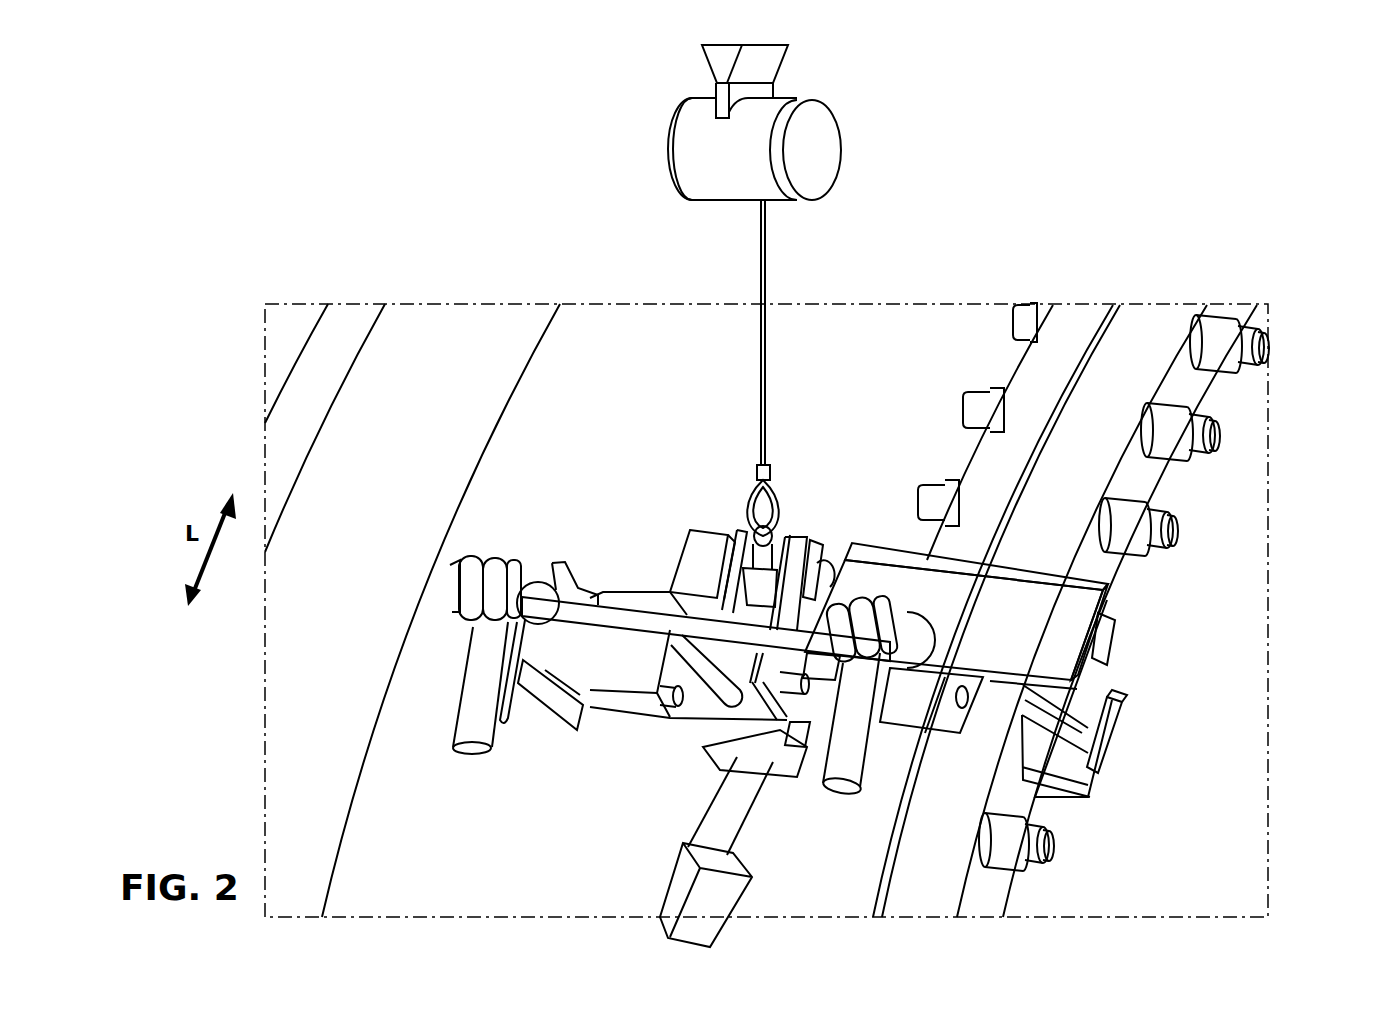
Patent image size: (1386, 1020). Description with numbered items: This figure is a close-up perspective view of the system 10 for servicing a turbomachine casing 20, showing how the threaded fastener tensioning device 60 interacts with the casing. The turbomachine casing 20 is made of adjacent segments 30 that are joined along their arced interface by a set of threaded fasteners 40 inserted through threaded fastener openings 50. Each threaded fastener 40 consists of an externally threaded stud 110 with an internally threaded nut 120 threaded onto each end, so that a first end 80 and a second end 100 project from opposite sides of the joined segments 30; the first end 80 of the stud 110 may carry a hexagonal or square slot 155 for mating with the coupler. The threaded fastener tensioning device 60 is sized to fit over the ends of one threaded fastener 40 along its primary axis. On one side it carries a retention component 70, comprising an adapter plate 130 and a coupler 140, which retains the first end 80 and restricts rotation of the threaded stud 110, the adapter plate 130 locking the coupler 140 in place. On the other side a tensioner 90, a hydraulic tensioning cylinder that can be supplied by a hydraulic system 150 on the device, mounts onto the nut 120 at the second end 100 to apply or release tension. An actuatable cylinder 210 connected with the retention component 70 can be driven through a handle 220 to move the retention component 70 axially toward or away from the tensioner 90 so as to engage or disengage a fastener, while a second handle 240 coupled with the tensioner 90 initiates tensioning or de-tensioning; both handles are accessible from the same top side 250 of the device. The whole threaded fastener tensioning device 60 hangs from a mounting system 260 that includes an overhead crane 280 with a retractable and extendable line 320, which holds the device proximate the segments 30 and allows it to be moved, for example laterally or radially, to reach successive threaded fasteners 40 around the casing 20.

The system 10 is at (572, 274).
The turbomachine casing 20 is at (345, 333).
The segments 30 is at (1005, 428).
The threaded fasteners 40 is at (1270, 330).
The threaded fastener openings 50 is at (1062, 325).
The threaded fastener tensioning device 60 is at (540, 770).
The retention component 70 is at (1138, 726).
The first end 80 is at (1212, 456).
The tensioner 90 is at (822, 742).
The second end 100 is at (962, 383).
The threaded stud 110 is at (928, 495).
The nut 120 is at (1035, 300).
The adapter plate 130 is at (1135, 680).
The coupler 140 is at (1053, 790).
The hydraulic system 150 is at (687, 893).
The slot 155 is at (1212, 430).
The actuatable cylinder 210 is at (915, 278).
The handle 220 is at (843, 770).
The second handle 240 is at (470, 680).
The same side 250 is at (633, 565).
The mounting system 260 is at (845, 326).
The overhead crane 280 is at (712, 166).
The line 320 is at (755, 278).